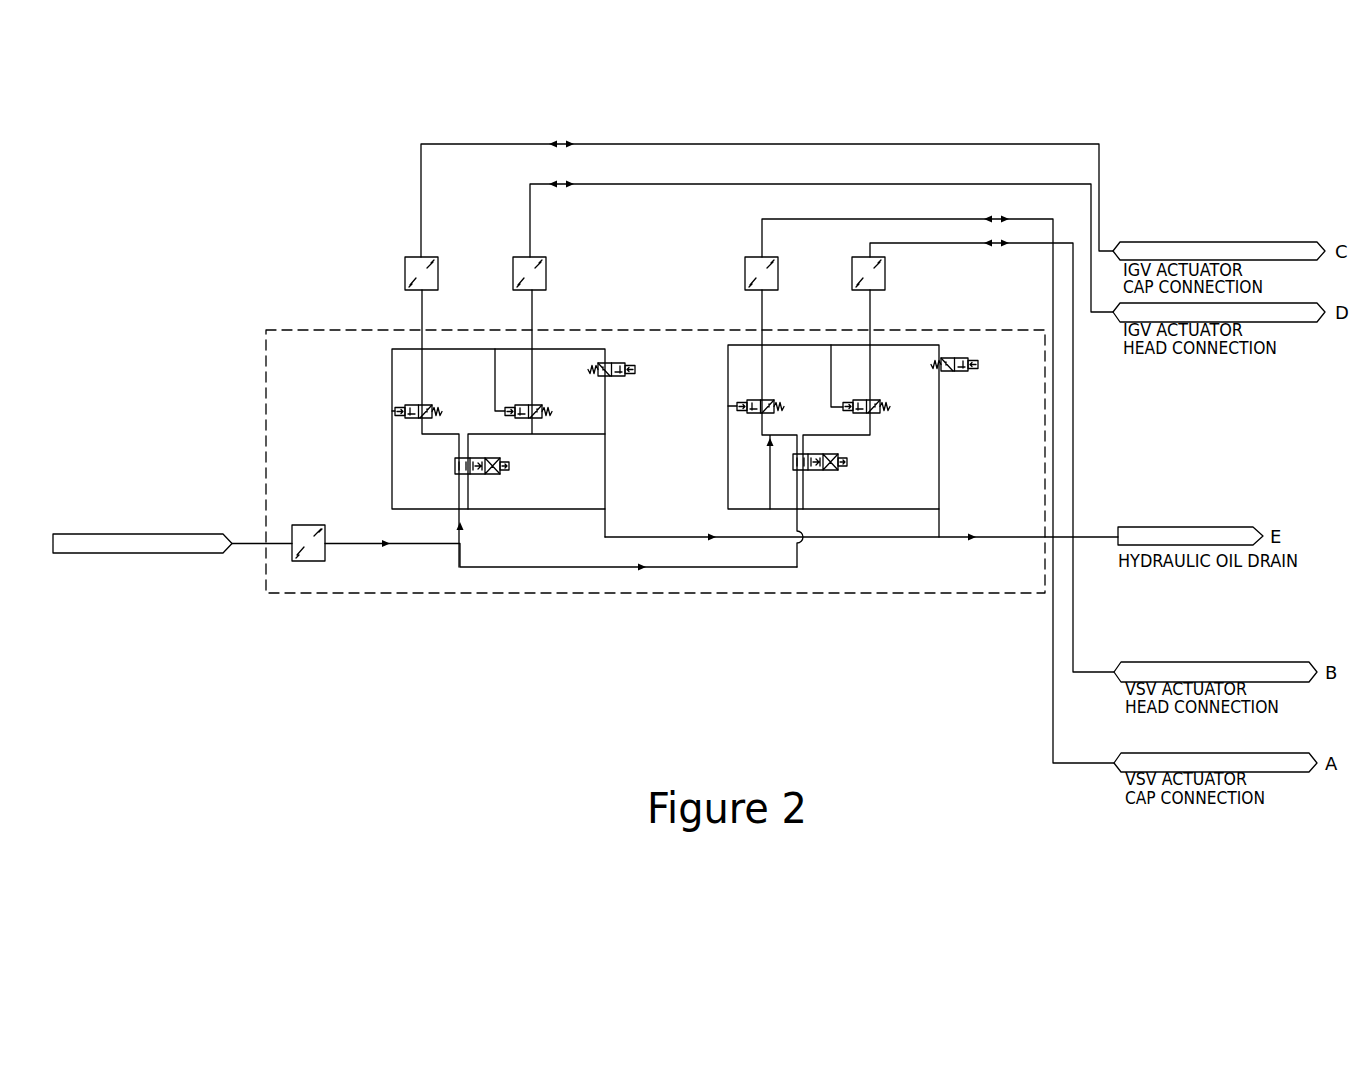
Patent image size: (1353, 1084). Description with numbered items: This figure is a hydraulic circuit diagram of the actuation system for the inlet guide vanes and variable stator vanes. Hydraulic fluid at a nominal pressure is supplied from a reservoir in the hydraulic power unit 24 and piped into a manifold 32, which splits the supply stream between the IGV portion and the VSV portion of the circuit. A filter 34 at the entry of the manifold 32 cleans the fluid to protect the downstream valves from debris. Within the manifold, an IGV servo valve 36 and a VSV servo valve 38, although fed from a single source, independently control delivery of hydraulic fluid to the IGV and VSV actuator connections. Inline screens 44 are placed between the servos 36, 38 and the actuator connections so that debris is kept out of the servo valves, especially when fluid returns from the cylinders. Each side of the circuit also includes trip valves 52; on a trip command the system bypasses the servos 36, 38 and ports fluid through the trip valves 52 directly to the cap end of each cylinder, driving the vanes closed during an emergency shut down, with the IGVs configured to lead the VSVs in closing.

The hydraulic power unit 24 is at (113, 534).
The manifold 32 is at (265, 377).
The filter 34 is at (325, 551).
The IGV servo valve 36 is at (488, 475).
The VSV servo valve 38 is at (810, 470).
The inline screens 44 is at (405, 272).
The trip valves 52 is at (411, 418).